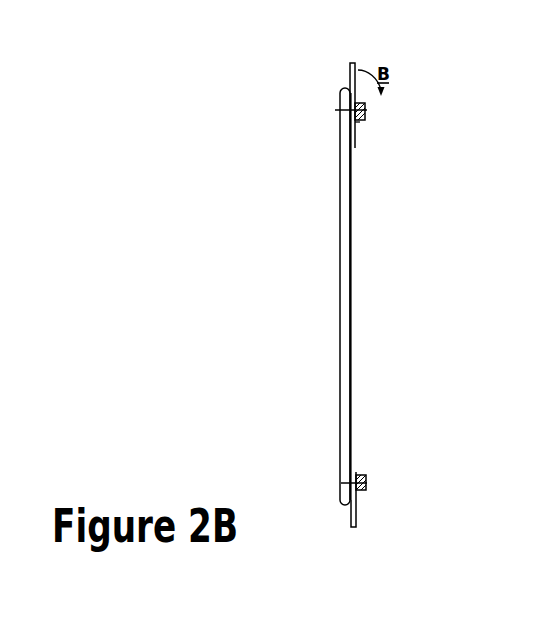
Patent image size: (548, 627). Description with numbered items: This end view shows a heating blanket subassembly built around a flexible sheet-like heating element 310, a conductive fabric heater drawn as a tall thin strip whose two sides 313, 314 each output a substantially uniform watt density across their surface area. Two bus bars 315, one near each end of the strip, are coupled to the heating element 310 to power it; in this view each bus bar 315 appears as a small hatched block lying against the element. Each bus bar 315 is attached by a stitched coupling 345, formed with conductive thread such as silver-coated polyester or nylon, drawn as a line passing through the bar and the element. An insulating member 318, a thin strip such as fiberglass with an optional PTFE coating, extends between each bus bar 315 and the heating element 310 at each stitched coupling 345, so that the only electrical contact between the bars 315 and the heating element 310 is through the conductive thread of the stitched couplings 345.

The heating element 310 is at (347, 433).
The side of heating element 313 is at (334, 459).
The side of heating element 314 is at (359, 418).
The bus bar 315 is at (367, 119).
The insulating member 318 is at (353, 64).
The stitched coupling 345 is at (337, 110).